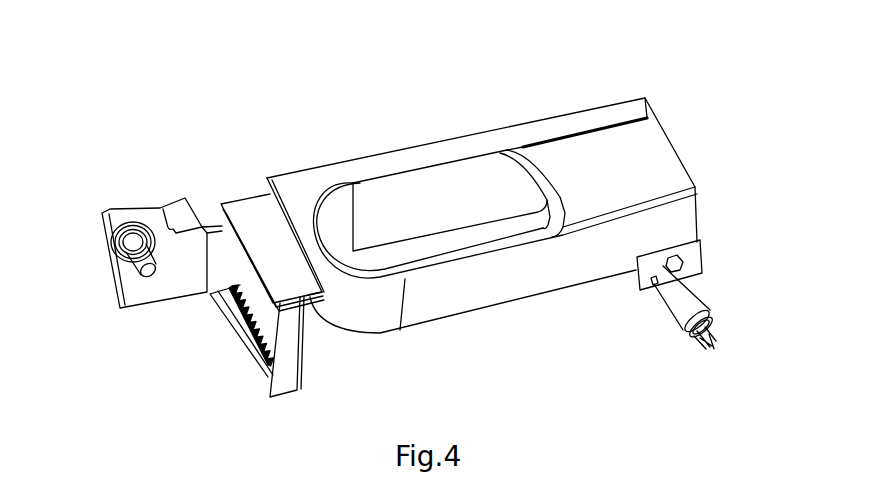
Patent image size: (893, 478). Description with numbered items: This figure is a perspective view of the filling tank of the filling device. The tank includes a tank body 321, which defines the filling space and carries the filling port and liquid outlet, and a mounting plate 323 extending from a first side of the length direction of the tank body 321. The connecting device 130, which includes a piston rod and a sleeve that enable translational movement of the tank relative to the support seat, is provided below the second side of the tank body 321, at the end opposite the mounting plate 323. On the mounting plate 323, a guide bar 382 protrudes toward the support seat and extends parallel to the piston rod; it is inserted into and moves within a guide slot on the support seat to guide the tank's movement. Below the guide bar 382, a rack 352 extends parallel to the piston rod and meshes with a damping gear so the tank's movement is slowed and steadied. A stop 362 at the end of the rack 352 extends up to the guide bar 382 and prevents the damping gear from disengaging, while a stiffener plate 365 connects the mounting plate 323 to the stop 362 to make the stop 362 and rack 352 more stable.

The tank body 321 is at (452, 147).
The connecting device 130 is at (690, 293).
The mounting plate 323 is at (143, 213).
The guide bar 382 is at (260, 214).
The stiffener plate 365 is at (226, 310).
The rack 352 is at (273, 325).
The stop 362 is at (268, 383).